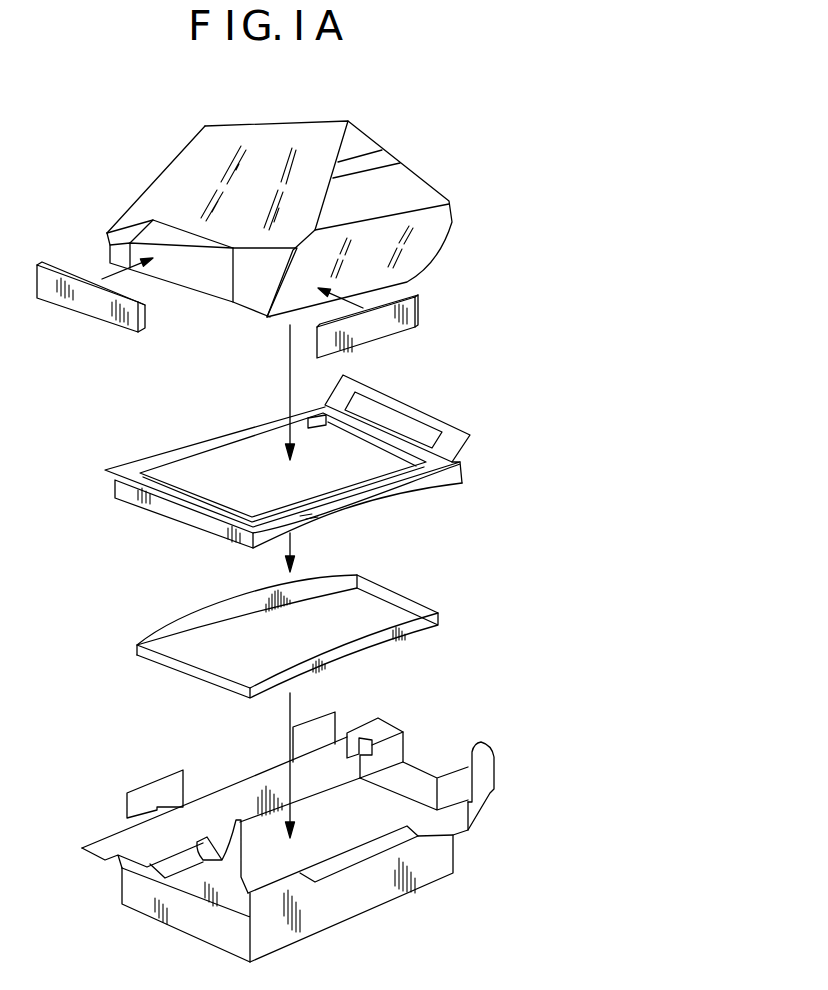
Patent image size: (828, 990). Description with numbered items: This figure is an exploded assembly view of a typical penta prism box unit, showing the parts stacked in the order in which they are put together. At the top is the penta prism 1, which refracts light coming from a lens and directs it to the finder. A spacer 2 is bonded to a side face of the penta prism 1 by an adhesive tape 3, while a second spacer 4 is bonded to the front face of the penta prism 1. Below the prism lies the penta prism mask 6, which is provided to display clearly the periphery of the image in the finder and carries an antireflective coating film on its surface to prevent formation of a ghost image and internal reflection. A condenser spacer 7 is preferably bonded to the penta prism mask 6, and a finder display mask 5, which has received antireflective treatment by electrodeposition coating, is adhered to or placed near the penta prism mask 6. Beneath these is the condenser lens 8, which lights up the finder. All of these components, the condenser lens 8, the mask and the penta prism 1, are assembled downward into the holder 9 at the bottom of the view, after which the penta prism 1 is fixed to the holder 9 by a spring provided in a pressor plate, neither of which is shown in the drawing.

The penta prism 1 is at (435, 240).
The spacer 2 is at (90, 308).
The adhesive tape 3 is at (147, 238).
The spacer 4 is at (415, 311).
The finder display mask 5 is at (450, 432).
The penta prism mask 6 is at (207, 445).
The condenser spacer 7 is at (185, 515).
The condenser lens 8 is at (377, 645).
The holder 9 is at (385, 888).